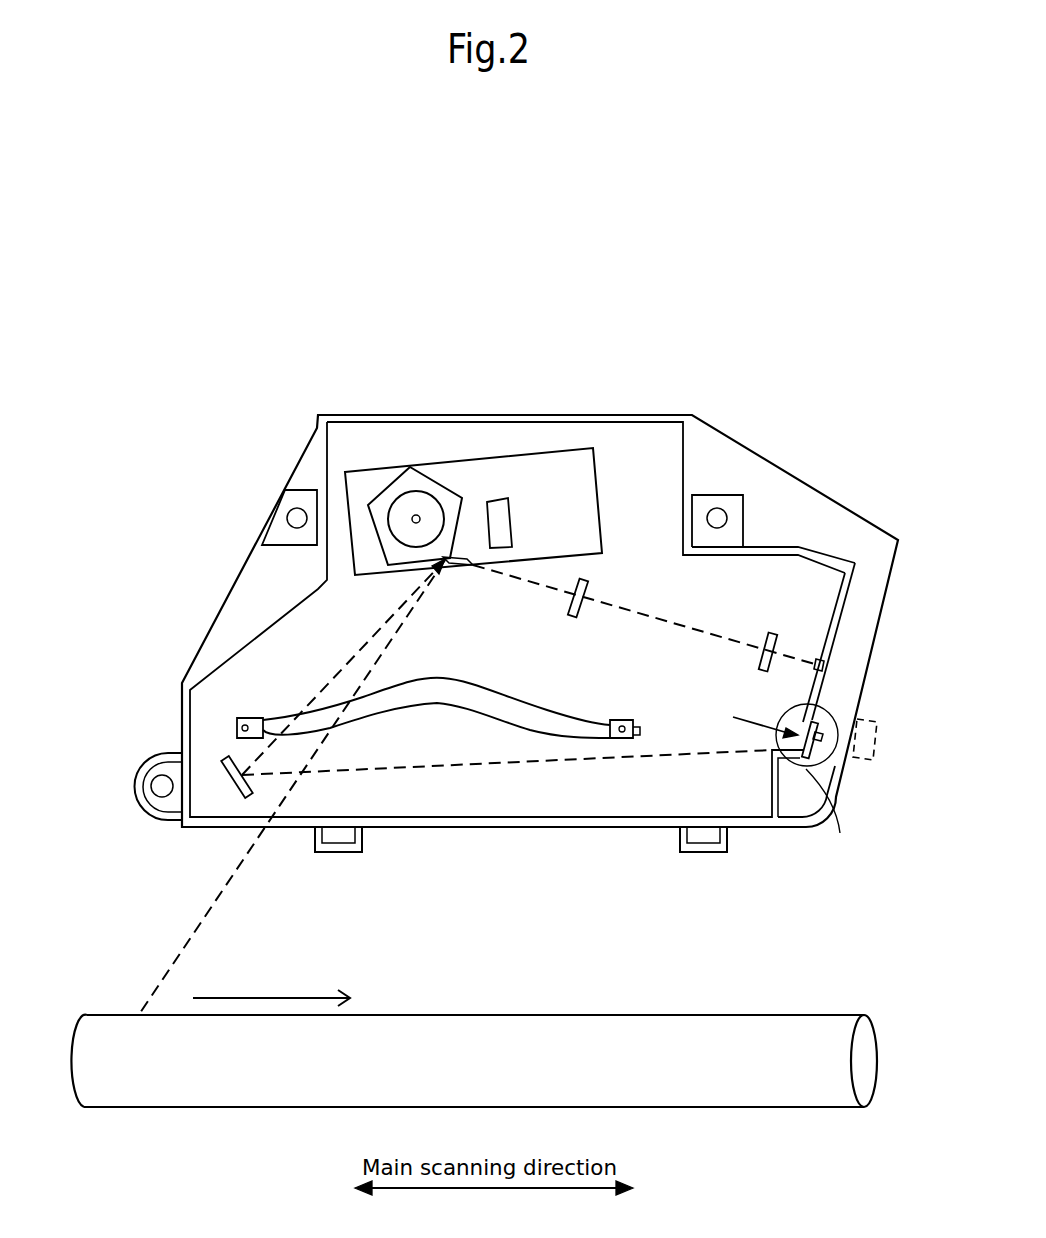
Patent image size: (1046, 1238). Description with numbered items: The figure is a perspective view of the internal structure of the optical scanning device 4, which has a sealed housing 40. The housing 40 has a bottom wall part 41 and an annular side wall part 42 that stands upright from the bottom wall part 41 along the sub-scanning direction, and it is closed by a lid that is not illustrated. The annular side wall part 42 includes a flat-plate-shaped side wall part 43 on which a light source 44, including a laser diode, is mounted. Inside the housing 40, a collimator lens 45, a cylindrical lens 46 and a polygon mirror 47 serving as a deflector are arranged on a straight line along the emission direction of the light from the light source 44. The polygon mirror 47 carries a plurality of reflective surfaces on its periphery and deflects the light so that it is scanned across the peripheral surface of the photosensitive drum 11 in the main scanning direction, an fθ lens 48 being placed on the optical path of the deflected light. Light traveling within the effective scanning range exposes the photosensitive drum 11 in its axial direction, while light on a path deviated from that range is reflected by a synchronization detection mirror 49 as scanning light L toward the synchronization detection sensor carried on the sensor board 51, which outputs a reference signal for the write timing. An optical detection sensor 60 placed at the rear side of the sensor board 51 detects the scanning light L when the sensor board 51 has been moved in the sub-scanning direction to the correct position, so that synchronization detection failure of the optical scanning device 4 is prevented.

The optical scanning device 4 is at (243, 343).
The housing 40 is at (297, 428).
The bottom wall part 41 is at (805, 585).
The annular side wall part 42 is at (773, 548).
The side wall part 43 is at (840, 633).
The light source 44 is at (828, 662).
The collimator lens 45 is at (761, 655).
The cylindrical lens 46 is at (583, 611).
The polygon mirror 47 is at (455, 496).
The fθ lens 48 is at (477, 685).
The synchronization detection mirror 49 is at (230, 767).
The sensor board 51 is at (810, 752).
The optical detection sensor 60 is at (862, 762).
The photosensitive drum 11 is at (542, 1013).
The scanning light L is at (492, 764).